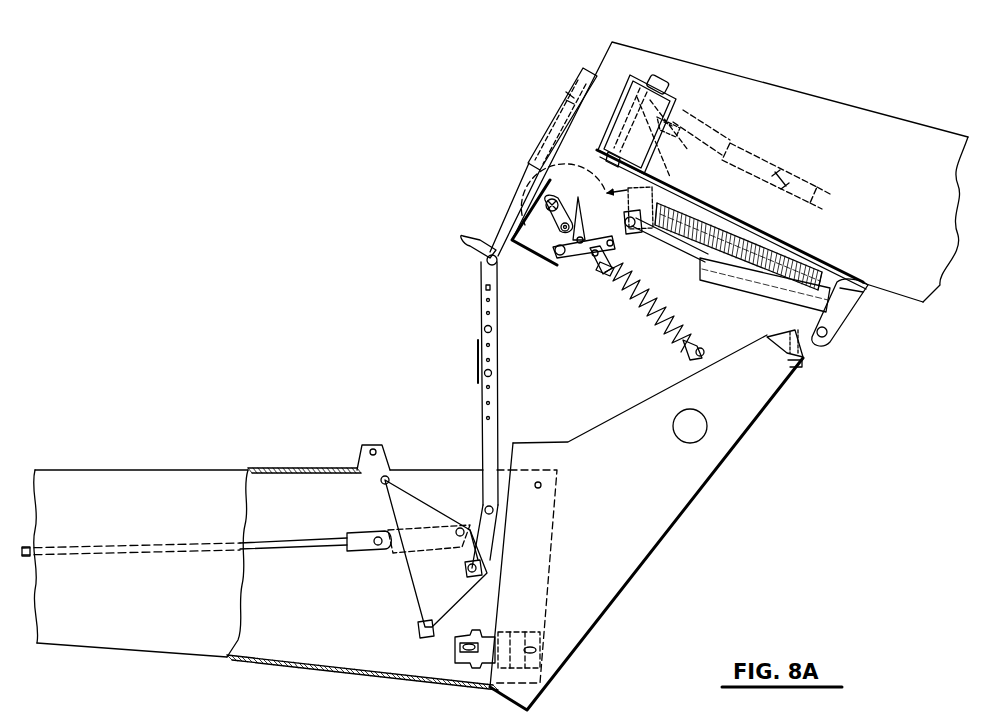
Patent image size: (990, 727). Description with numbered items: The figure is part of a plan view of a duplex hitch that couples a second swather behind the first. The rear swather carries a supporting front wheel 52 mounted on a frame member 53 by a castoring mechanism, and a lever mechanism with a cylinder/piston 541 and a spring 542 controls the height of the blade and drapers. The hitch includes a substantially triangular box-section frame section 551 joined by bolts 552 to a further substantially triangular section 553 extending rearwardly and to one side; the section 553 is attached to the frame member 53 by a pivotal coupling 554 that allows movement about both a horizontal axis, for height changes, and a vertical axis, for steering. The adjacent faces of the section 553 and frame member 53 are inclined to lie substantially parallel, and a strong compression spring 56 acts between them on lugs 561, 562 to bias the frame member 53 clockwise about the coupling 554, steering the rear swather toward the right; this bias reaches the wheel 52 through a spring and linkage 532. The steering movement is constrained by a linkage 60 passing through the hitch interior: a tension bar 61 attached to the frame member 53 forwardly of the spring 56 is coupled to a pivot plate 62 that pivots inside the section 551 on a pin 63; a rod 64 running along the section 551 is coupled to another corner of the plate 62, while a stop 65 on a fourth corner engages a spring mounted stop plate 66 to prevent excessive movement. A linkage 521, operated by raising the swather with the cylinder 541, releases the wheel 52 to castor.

The frame member 53 is at (607, 72).
The cylinder/piston 541 is at (797, 168).
The spring 542 is at (790, 240).
The linkage 521 is at (528, 230).
The lug 561 is at (603, 268).
The compression spring 56 is at (640, 320).
The lug 562 is at (693, 352).
The spring and linkage 532 is at (710, 296).
The front wheel 52 is at (762, 296).
The pivotal coupling 554 is at (830, 348).
The substantially triangular section 553 is at (617, 559).
The bolts 552 is at (538, 480).
The tension bar 61 is at (478, 356).
The frame section 551 is at (198, 485).
The rod 64 is at (278, 546).
The pin 63 is at (388, 477).
The pivot plate 62 is at (413, 507).
The linkage 60 is at (375, 520).
The stop 65 is at (417, 624).
The spring mounted stop plate 66 is at (453, 650).